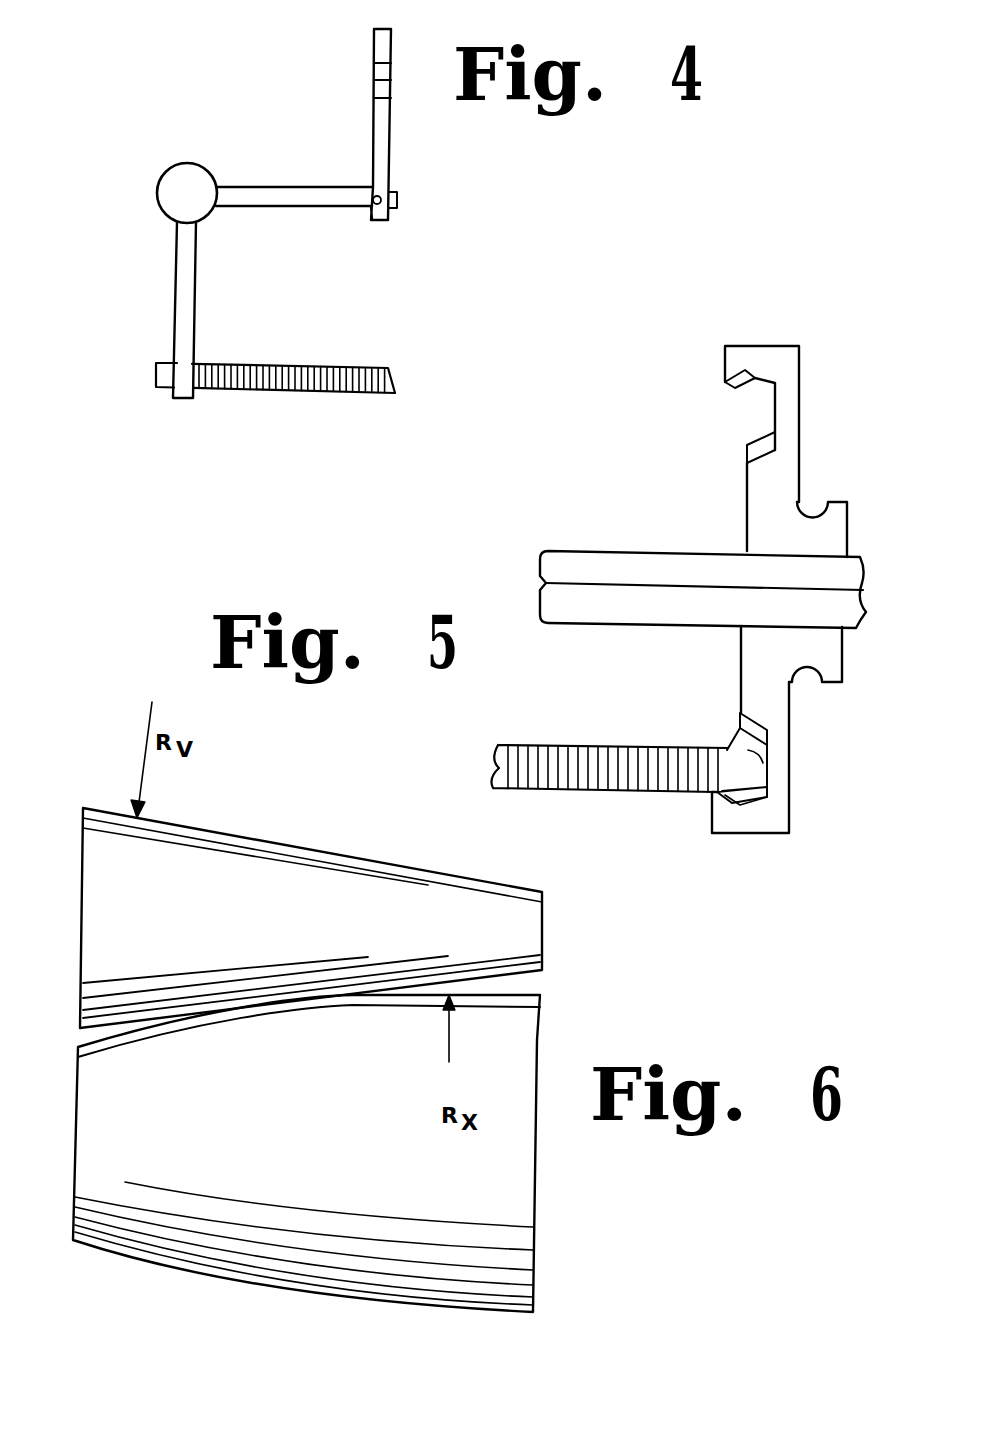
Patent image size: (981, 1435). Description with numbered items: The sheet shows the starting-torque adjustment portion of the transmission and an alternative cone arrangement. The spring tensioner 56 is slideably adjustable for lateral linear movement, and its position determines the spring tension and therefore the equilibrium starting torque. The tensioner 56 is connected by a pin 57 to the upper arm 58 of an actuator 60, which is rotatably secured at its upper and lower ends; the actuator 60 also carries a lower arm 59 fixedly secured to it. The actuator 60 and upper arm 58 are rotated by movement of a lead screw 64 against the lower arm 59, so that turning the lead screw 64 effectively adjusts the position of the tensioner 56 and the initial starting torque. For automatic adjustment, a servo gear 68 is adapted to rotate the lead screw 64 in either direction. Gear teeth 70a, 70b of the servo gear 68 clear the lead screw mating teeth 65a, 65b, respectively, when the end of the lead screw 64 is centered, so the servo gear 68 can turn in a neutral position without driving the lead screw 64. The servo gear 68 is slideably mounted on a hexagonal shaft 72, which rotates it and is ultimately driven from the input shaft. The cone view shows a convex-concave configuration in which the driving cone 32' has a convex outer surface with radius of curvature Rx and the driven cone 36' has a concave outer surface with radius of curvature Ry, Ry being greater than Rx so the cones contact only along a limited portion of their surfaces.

In FIG. 4, the spring tensioner 56 is at (378, 137).
In FIG. 4, the pin 57 is at (378, 207).
In FIG. 4, the upper arm 58 is at (290, 197).
In FIG. 4, the lower arm 59 is at (185, 297).
In FIG. 4, the actuator 60 is at (197, 165).
In FIG. 4, the lead screw 64 is at (283, 367).
In FIG. 6, the lead screw 64 is at (612, 745).
In FIG. 6, the lead screw mating tooth 65a is at (770, 790).
In FIG. 6, the lead screw mating tooth 65b is at (767, 763).
In FIG. 6, the servo gear 68 is at (828, 527).
In FIG. 6, the gear tooth 70a is at (735, 385).
In FIG. 6, the gear tooth 70b is at (758, 447).
In FIG. 6, the hexagonal shaft 72 is at (622, 563).
In FIG. 5, the driving cone 32' is at (306, 1153).
In FIG. 5, the driven cone 36' is at (311, 918).